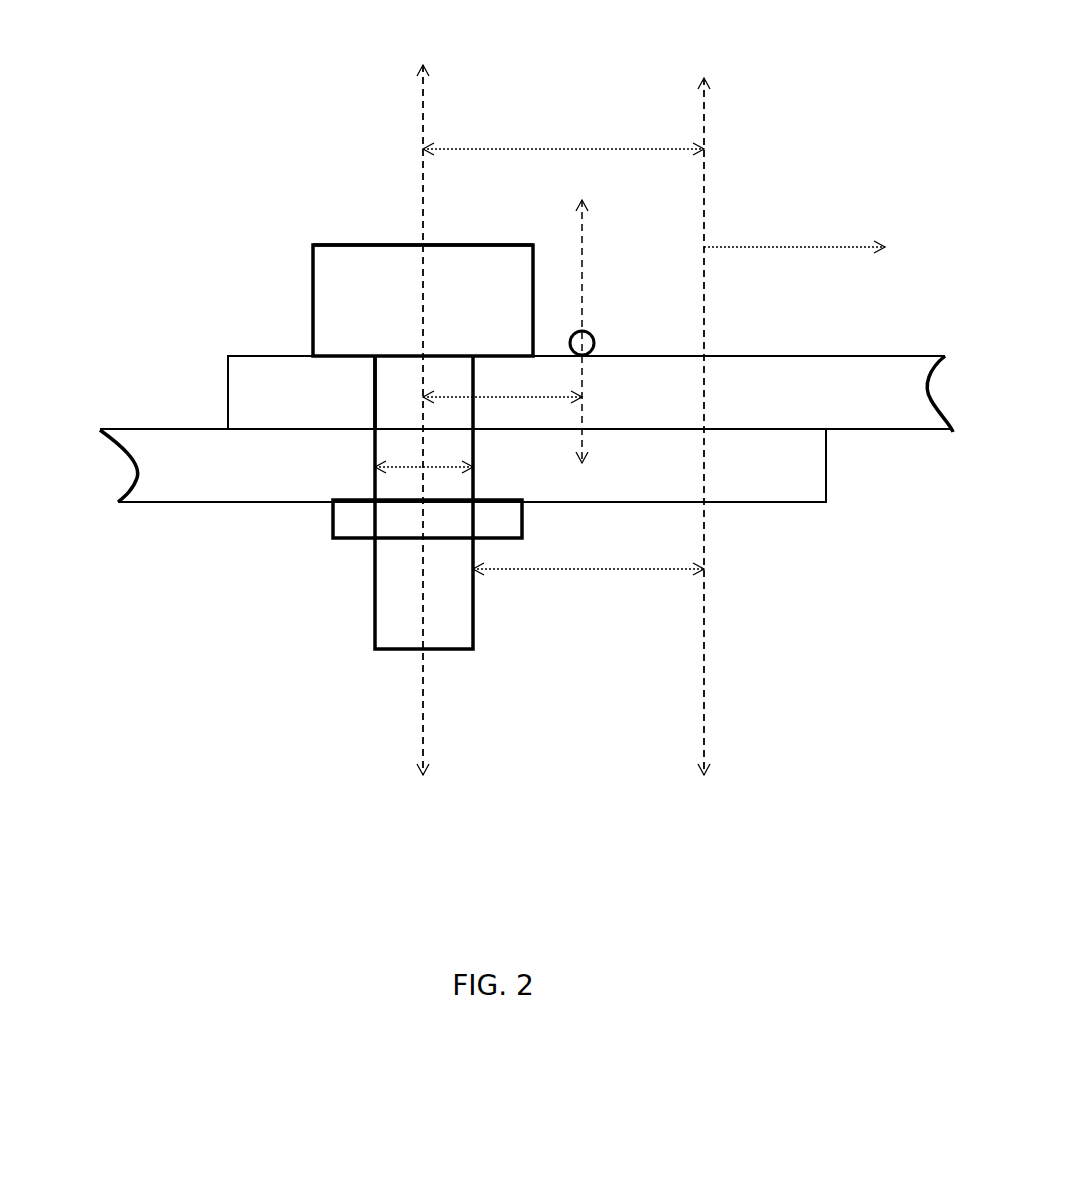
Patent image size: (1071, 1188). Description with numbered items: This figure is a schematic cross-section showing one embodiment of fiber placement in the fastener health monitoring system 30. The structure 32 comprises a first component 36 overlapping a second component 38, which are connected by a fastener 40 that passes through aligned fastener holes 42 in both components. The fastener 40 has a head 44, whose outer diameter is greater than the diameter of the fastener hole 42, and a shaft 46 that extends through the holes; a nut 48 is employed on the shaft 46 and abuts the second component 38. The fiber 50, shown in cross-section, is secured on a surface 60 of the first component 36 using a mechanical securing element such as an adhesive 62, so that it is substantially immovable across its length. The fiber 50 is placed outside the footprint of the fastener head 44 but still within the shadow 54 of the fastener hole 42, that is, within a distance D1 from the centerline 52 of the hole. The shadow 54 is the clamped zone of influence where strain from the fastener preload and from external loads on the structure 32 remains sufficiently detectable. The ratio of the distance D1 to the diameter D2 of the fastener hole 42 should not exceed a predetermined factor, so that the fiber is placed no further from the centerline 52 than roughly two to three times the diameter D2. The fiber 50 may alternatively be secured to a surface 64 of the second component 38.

The fastener health monitoring system 30 is at (333, 148).
The structure 32 is at (199, 319).
The first component 36 is at (253, 392).
The second component 38 is at (253, 465).
The fastener 40 is at (333, 301).
The fastener hole 42 is at (372, 393).
The head 44 is at (373, 308).
The shaft 46 is at (388, 570).
The nut 48 is at (350, 518).
The fiber 50 is at (592, 331).
The centerline 52 is at (425, 705).
The shadow 54 is at (588, 570).
The surface 60 is at (887, 356).
The adhesive 62 is at (596, 350).
The surface 64 is at (742, 503).
The distance D1 is at (563, 131).
The diameter D2 is at (423, 467).